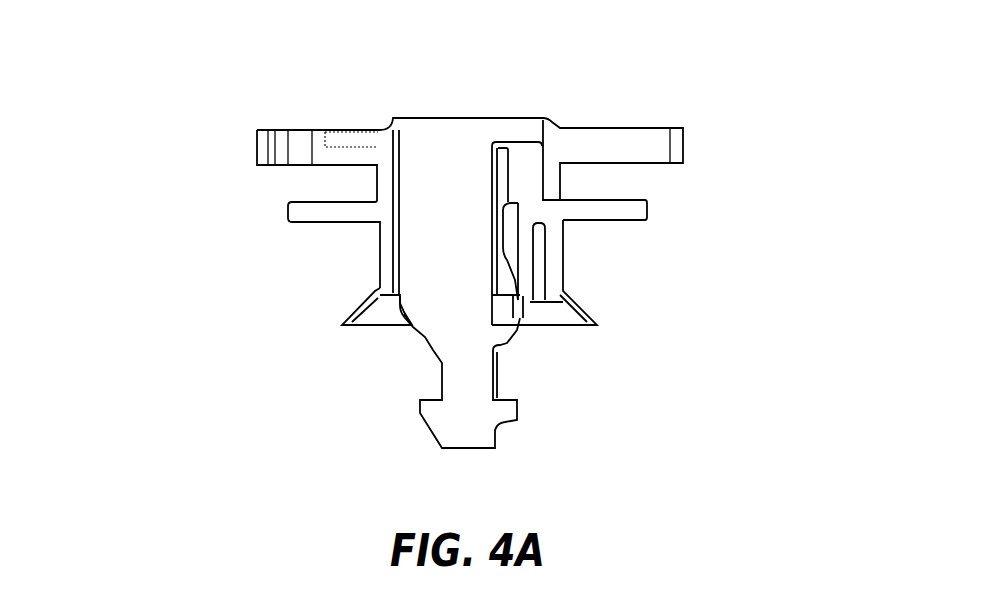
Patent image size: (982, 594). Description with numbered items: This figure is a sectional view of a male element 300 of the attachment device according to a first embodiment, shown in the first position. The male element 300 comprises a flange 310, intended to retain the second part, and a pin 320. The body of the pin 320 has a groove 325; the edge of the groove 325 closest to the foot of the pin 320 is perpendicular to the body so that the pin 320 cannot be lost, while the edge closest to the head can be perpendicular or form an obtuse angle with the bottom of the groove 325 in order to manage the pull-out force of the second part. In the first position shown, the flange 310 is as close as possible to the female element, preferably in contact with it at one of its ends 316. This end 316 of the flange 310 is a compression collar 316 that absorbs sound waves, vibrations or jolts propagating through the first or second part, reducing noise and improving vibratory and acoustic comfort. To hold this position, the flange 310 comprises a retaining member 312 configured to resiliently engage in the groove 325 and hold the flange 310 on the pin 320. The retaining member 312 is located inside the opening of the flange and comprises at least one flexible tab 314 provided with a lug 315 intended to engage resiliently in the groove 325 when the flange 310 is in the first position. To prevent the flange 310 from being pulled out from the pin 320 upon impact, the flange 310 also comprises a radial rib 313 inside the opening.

The male element 300 is at (178, 95).
The flange 310 is at (688, 145).
The retaining member 312 is at (545, 275).
The radial rib 313 is at (530, 198).
The flexible tab 314 is at (535, 250).
The lug 315 is at (532, 310).
The compression collar 316 is at (340, 312).
The pin 320 is at (385, 410).
The groove 325 is at (505, 318).